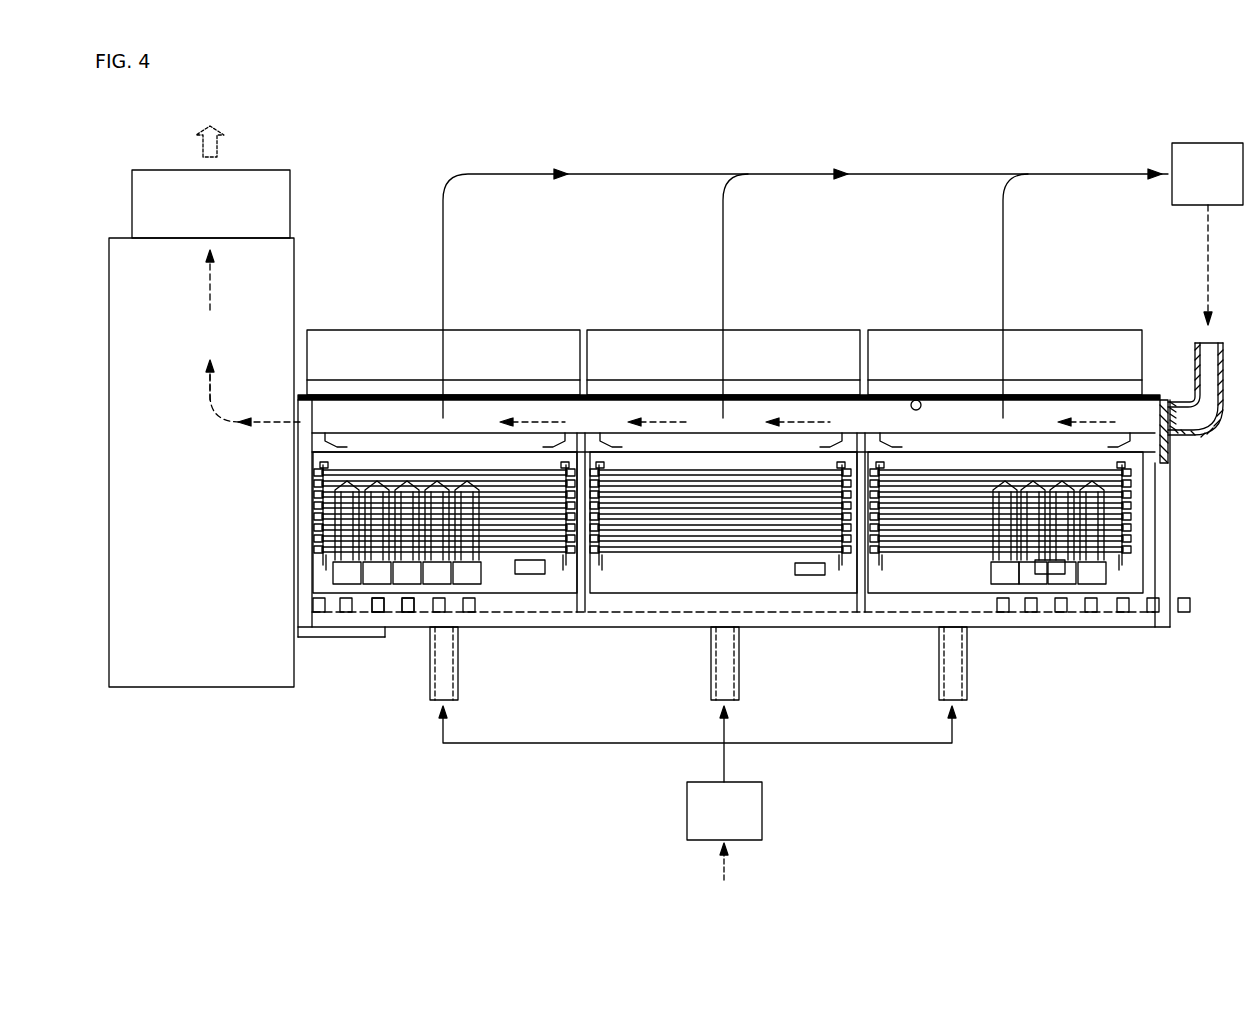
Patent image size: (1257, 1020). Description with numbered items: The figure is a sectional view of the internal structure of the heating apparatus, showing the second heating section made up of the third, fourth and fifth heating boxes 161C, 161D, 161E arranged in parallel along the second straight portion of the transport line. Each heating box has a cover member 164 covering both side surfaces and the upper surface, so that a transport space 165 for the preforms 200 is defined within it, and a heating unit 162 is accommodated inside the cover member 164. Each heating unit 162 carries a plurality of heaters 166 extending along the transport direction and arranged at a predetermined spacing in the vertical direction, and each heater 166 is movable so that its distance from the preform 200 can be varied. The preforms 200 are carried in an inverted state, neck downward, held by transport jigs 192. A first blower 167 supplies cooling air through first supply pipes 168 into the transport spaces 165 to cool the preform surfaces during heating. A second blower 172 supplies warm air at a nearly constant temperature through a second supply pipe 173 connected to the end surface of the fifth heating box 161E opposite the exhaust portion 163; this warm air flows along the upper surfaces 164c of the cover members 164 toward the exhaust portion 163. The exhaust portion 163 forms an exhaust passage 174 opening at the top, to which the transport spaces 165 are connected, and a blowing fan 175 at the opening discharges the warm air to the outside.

The third heating box 161C is at (570, 308).
The fourth heating box 161D is at (840, 308).
The fifth heating box 161E is at (1120, 308).
The heating unit 162 is at (537, 560).
The exhaust portion 163 is at (268, 462).
The cover member 164 is at (468, 412).
The upper surface of cover member 164c is at (918, 400).
The transport space 165 is at (724, 342).
The heater 166 is at (832, 649).
The first blower 167 is at (745, 800).
The first supply pipe 168 is at (445, 657).
The second blower 172 is at (1188, 162).
The second supply pipe 173 is at (1204, 408).
The exhaust passage 174 is at (277, 272).
The blowing fan 175 is at (272, 218).
The transport jig 192 is at (378, 590).
The preform 200 is at (407, 567).